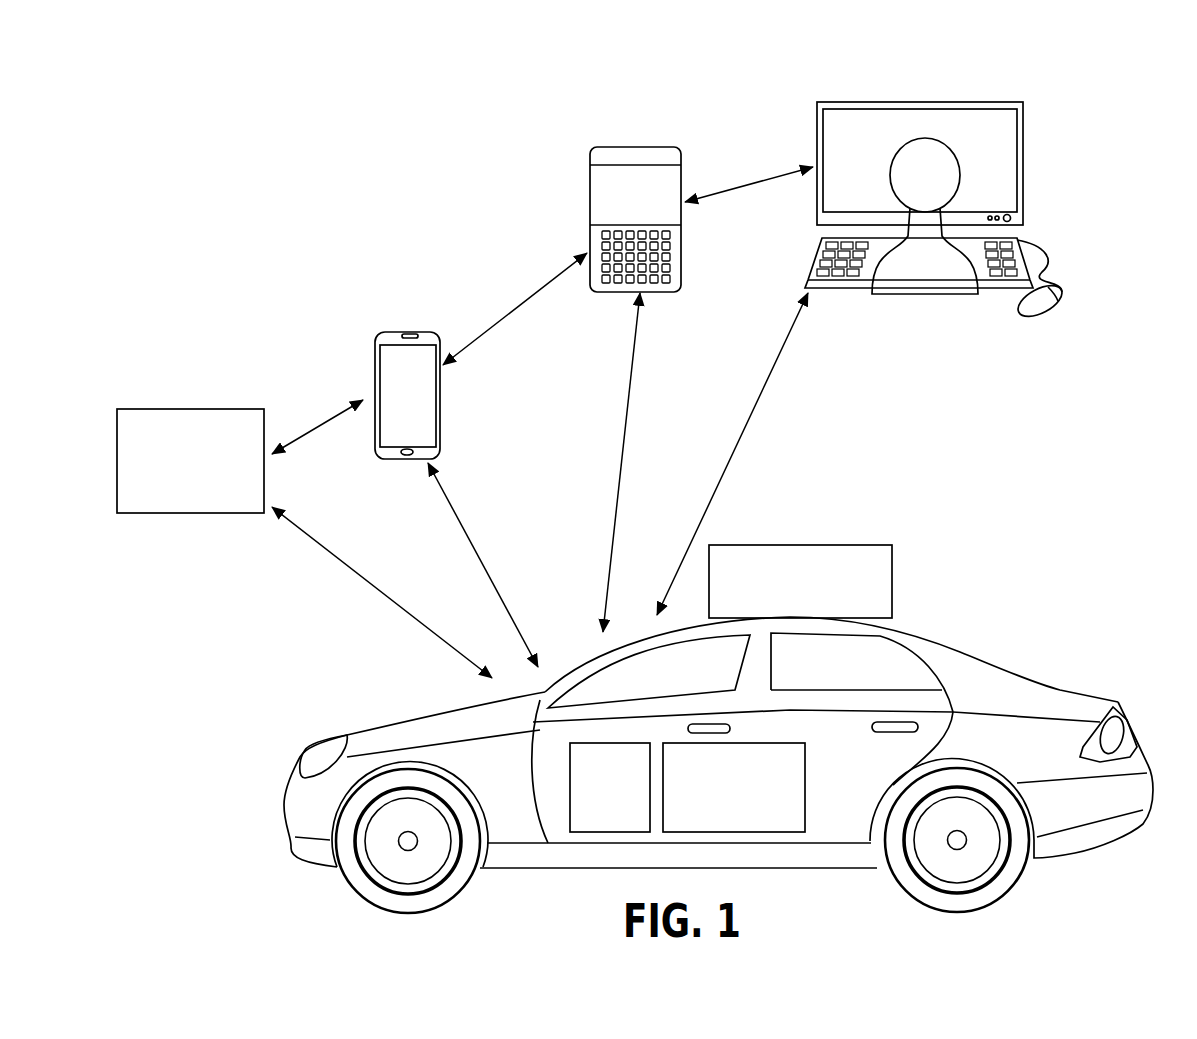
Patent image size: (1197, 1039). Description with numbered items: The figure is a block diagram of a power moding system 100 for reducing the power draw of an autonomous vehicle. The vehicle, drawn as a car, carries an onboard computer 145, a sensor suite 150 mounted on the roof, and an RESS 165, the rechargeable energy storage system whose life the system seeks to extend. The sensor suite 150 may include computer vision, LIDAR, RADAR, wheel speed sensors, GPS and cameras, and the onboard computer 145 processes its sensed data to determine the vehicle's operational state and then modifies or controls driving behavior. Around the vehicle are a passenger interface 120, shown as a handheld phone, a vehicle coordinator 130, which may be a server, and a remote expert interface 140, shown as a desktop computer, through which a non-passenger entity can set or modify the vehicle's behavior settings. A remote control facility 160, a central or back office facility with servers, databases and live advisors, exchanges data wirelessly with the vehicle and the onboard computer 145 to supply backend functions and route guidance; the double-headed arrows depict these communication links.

The power moding system 100 is at (1124, 100).
The passenger interface 120 is at (397, 332).
The vehicle coordinator 130 is at (621, 147).
The remote expert interface 140 is at (850, 103).
The onboard computer 145 is at (751, 827).
The sensor suite 150 is at (817, 609).
The remote control facility 160 is at (209, 499).
The RESS 165 is at (627, 819).